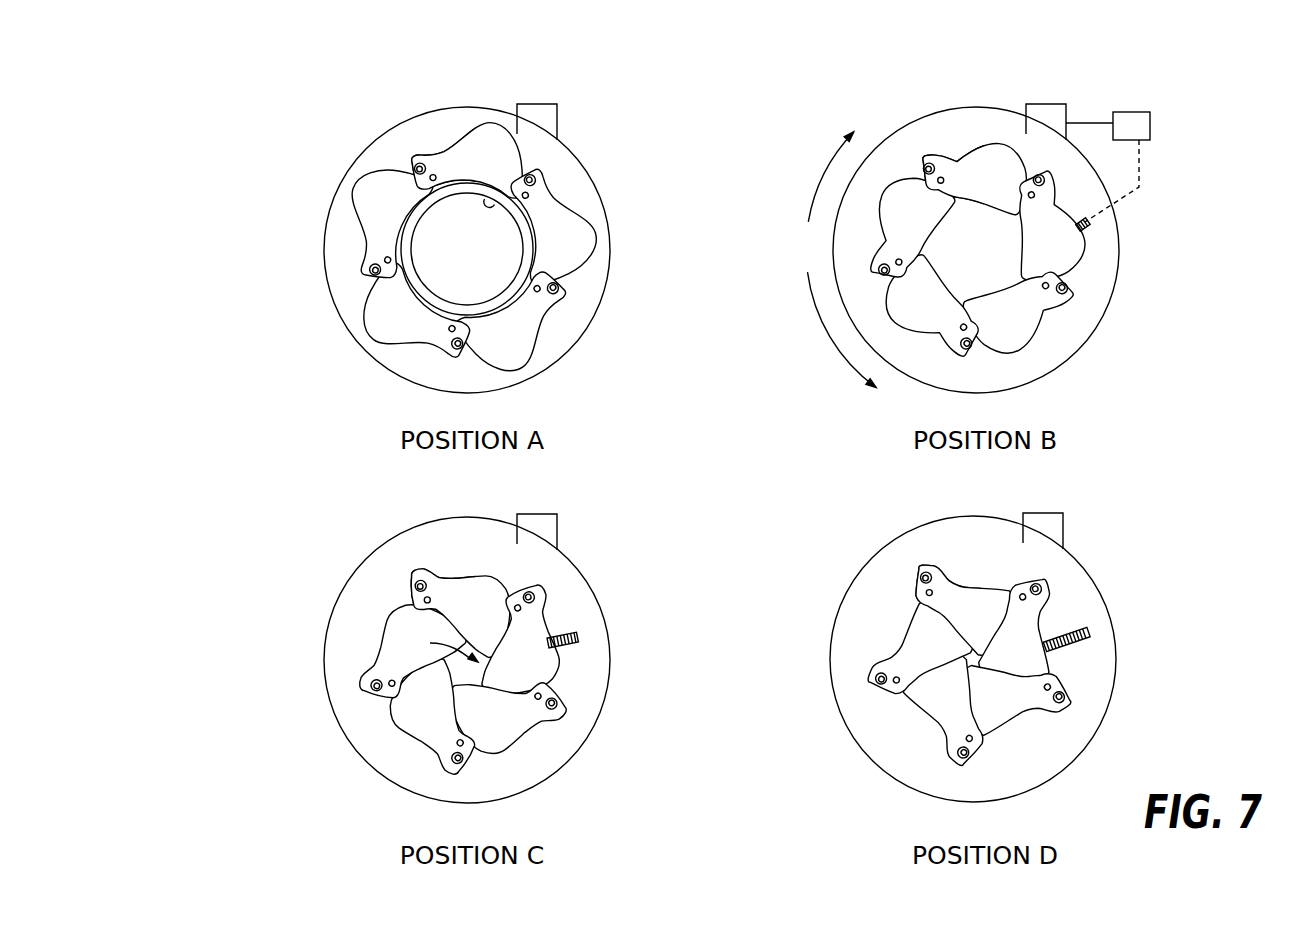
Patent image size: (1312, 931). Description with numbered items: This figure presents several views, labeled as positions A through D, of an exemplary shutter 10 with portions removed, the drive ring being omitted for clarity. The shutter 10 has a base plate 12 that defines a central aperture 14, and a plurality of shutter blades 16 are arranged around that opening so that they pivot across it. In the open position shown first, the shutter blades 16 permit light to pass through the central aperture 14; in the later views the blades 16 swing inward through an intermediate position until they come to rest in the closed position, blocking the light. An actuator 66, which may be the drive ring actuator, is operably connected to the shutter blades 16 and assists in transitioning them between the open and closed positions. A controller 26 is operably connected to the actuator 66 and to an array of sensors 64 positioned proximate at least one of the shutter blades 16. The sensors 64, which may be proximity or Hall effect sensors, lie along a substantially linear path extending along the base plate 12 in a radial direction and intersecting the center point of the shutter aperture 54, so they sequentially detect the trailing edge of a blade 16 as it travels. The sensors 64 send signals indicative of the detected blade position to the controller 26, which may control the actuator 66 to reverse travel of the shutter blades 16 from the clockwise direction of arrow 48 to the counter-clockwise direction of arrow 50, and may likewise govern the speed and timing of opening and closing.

The shutter 10 is at (312, 132).
The base plate 12 is at (607, 212).
The central aperture 14 is at (495, 204).
The shutter blades 16 is at (567, 247).
The controller 26 is at (1143, 138).
The arrow 48 is at (827, 168).
The arrow 50 is at (822, 320).
The shutter aperture 54 is at (430, 643).
The sensors 64 is at (1089, 226).
The actuator 66 is at (558, 122).